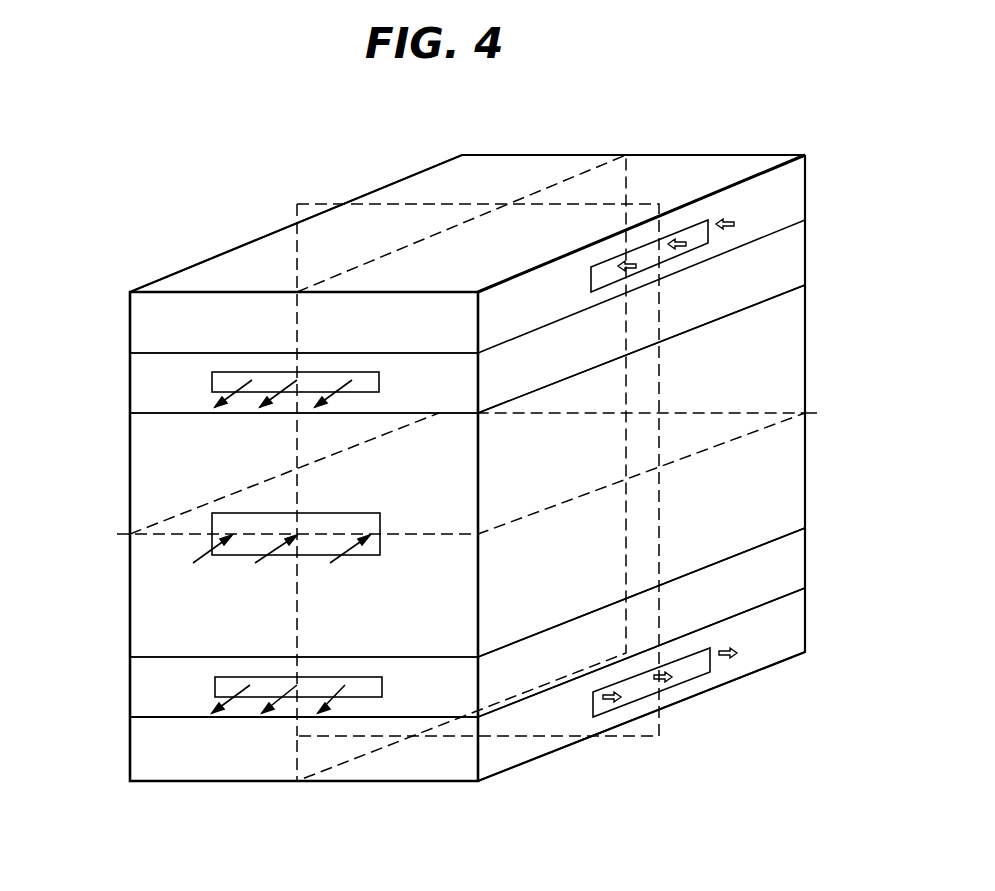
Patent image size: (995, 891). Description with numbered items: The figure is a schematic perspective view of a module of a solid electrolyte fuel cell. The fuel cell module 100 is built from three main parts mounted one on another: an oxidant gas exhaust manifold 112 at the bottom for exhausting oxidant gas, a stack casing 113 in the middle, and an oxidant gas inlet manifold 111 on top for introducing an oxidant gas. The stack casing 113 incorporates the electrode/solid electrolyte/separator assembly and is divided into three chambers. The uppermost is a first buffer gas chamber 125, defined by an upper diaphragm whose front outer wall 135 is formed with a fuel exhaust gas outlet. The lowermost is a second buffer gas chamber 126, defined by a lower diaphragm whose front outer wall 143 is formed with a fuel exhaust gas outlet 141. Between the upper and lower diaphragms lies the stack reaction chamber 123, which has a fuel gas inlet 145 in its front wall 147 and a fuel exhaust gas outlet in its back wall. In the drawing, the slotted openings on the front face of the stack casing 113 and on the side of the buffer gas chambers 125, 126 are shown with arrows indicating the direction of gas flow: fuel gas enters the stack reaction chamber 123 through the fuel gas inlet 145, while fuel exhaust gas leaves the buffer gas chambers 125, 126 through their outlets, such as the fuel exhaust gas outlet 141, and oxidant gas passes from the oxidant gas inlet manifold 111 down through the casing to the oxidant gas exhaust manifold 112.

The fuel cell module 100 is at (426, 161).
The oxidant gas inlet manifold 111 is at (320, 236).
The oxidant gas exhaust manifold 112 is at (538, 748).
The stack casing 113 is at (90, 717).
The stack reaction chamber 123 is at (808, 363).
The first buffer gas chamber 125 is at (780, 273).
The second buffer gas chamber 126 is at (785, 563).
The front outer wall 135 is at (140, 368).
The fuel exhaust gas outlet 141 is at (373, 690).
The front outer wall 143 is at (147, 698).
The fuel gas inlet 145 is at (343, 523).
The front wall 147 is at (150, 493).